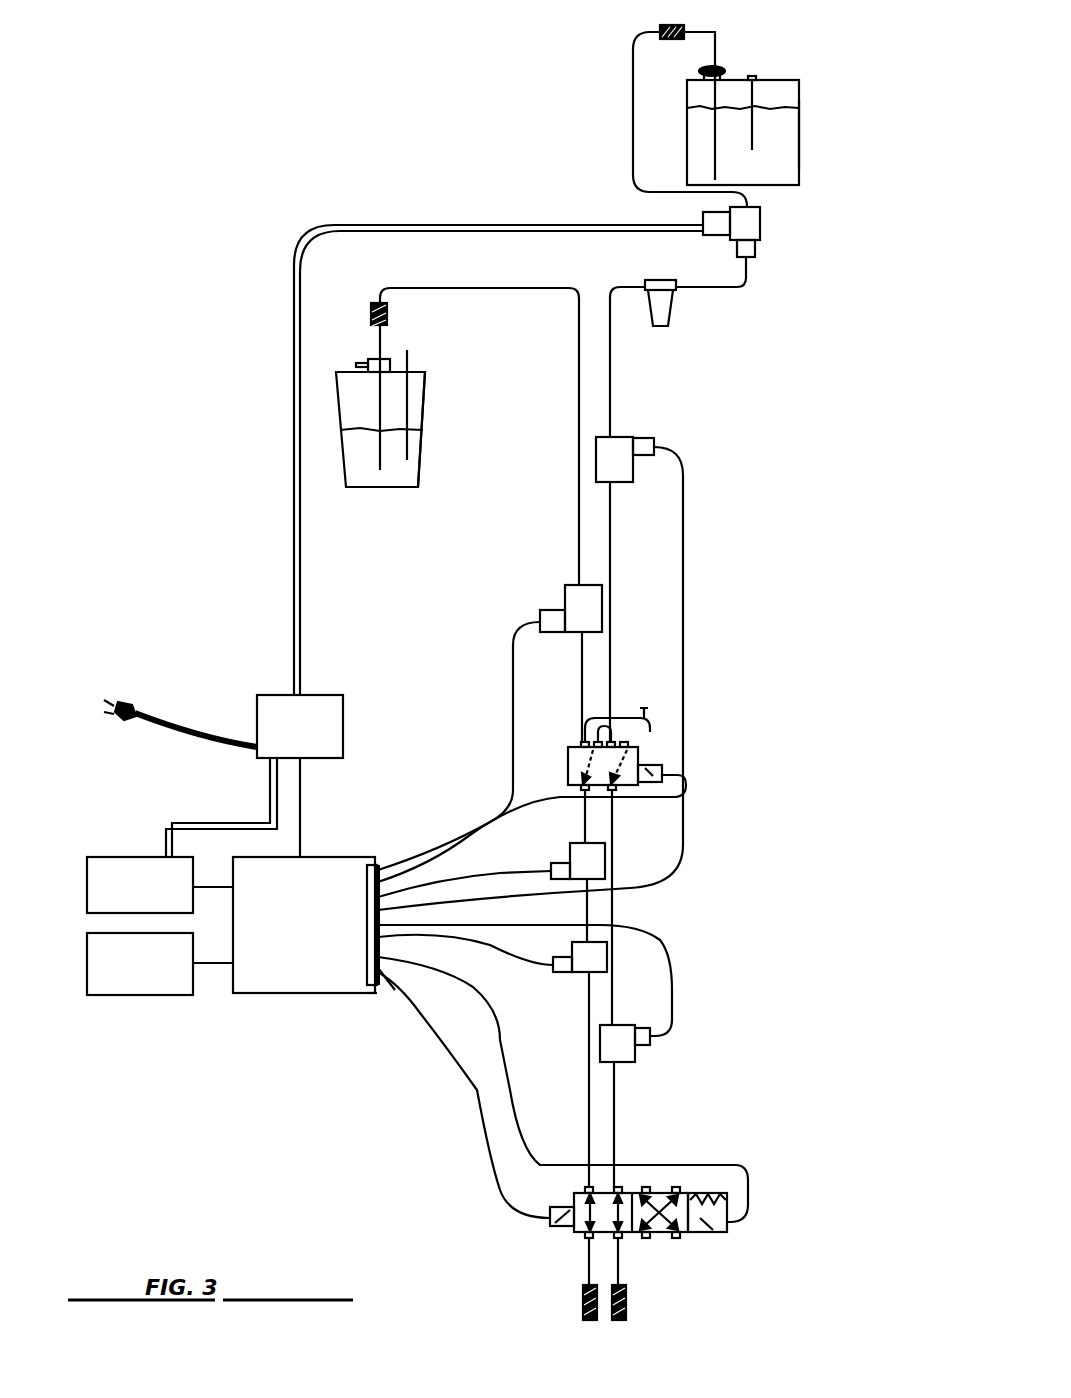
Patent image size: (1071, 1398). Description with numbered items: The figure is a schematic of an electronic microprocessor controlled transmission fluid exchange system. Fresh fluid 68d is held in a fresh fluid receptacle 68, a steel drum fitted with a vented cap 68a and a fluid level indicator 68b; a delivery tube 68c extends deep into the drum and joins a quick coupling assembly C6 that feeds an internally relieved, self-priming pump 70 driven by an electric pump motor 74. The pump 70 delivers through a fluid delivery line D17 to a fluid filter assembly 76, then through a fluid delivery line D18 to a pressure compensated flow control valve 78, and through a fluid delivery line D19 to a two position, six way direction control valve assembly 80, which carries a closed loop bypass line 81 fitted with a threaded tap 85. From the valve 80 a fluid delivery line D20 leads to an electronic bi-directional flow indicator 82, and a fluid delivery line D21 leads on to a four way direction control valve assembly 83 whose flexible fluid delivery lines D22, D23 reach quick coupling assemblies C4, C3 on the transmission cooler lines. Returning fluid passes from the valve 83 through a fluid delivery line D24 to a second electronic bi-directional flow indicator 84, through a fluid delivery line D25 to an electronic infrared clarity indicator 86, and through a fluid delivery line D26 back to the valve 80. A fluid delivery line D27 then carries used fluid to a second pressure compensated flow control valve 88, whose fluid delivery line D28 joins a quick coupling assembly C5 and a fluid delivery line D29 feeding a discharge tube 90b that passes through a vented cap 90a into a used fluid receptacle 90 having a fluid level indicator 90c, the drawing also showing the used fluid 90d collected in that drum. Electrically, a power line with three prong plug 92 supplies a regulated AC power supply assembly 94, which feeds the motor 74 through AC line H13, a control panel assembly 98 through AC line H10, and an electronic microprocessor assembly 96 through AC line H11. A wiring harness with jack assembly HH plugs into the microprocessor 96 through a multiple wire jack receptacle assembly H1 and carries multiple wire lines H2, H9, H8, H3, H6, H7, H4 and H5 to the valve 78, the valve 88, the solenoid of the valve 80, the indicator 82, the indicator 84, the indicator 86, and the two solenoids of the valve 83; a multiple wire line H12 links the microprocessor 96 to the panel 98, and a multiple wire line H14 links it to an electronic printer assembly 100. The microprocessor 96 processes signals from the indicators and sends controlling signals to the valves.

The fresh fluid receptacle 68 is at (808, 168).
The vented cap 68a is at (716, 66).
The fluid level indicator 68b is at (752, 76).
The delivery tube 68c is at (715, 128).
The fresh fluid 68d is at (801, 135).
The quick coupling assembly C6 is at (665, 28).
The self-priming pump 70 is at (762, 222).
The electric pump motor 74 is at (703, 232).
The fluid delivery line D17 is at (748, 279).
The fluid filter assembly 76 is at (676, 313).
The fluid delivery line D18 is at (612, 383).
The pressure compensated flow control valve 78 is at (645, 436).
The multiple wire line H2 is at (684, 525).
The fluid delivery line D19 is at (611, 523).
The fluid delivery line D20 is at (613, 850).
The fluid delivery line D21 is at (616, 1138).
The fluid delivery line D28 is at (578, 523).
The quick coupling assembly C5 is at (374, 302).
The fluid delivery line D29 is at (379, 350).
The pressure compensated flow control valve 88 is at (565, 600).
The fluid delivery line D27 is at (580, 687).
The multiple wire line H9 is at (513, 664).
The direction control valve assembly 80 is at (650, 750).
The closed loop bypass line 81 is at (614, 715).
The threaded tap 85 is at (664, 714).
The multiple wire line H8 is at (623, 799).
The fluid delivery line D26 is at (585, 821).
The electronic infrared clarity indicator 86 is at (570, 852).
The multiple wire line H7 is at (490, 875).
The fluid delivery line D25 is at (585, 915).
The electronic bi-directional flow indicator 84 is at (578, 975).
The multiple wire line H3 is at (663, 946).
The multiple wire line H6 is at (494, 986).
The electronic bi-directional flow indicator 82 is at (622, 1062).
The fluid delivery line D24 is at (588, 1119).
The multiple wire line H4 is at (740, 1165).
The multiple wire line H5 is at (487, 1160).
The direction control valve assembly 83 is at (692, 1185).
The fluid delivery line D23 is at (587, 1264).
The fluid delivery line D22 is at (622, 1263).
The quick coupling assembly C4 is at (583, 1300).
The quick coupling assembly C3 is at (627, 1300).
The used fluid receptacle 90 is at (398, 497).
The vented cap 90a is at (371, 360).
The discharge tube 90b is at (378, 470).
The fluid level indicator 90c is at (410, 364).
The container wall 90d is at (420, 470).
The three wire AC line with ground wire H13 is at (292, 523).
The regulated AC power supply assembly 94 is at (317, 683).
The three wire AC power line with ground wire and 3 prong plug 92 is at (168, 722).
The three wire AC line with ground wire H10 is at (265, 821).
The 3 wire AC line with ground wire H11 is at (302, 806).
The multiple wire line H12 is at (203, 885).
The electronic microprocessor assembly 96 is at (365, 848).
The control panel assembly 98 is at (122, 840).
The electronic printer assembly 100 is at (134, 1008).
The multiple wire line H14 is at (208, 963).
The multiple wire jack receptacle assembly H1 is at (370, 995).
The wiring harness with jack assembly HH is at (385, 993).